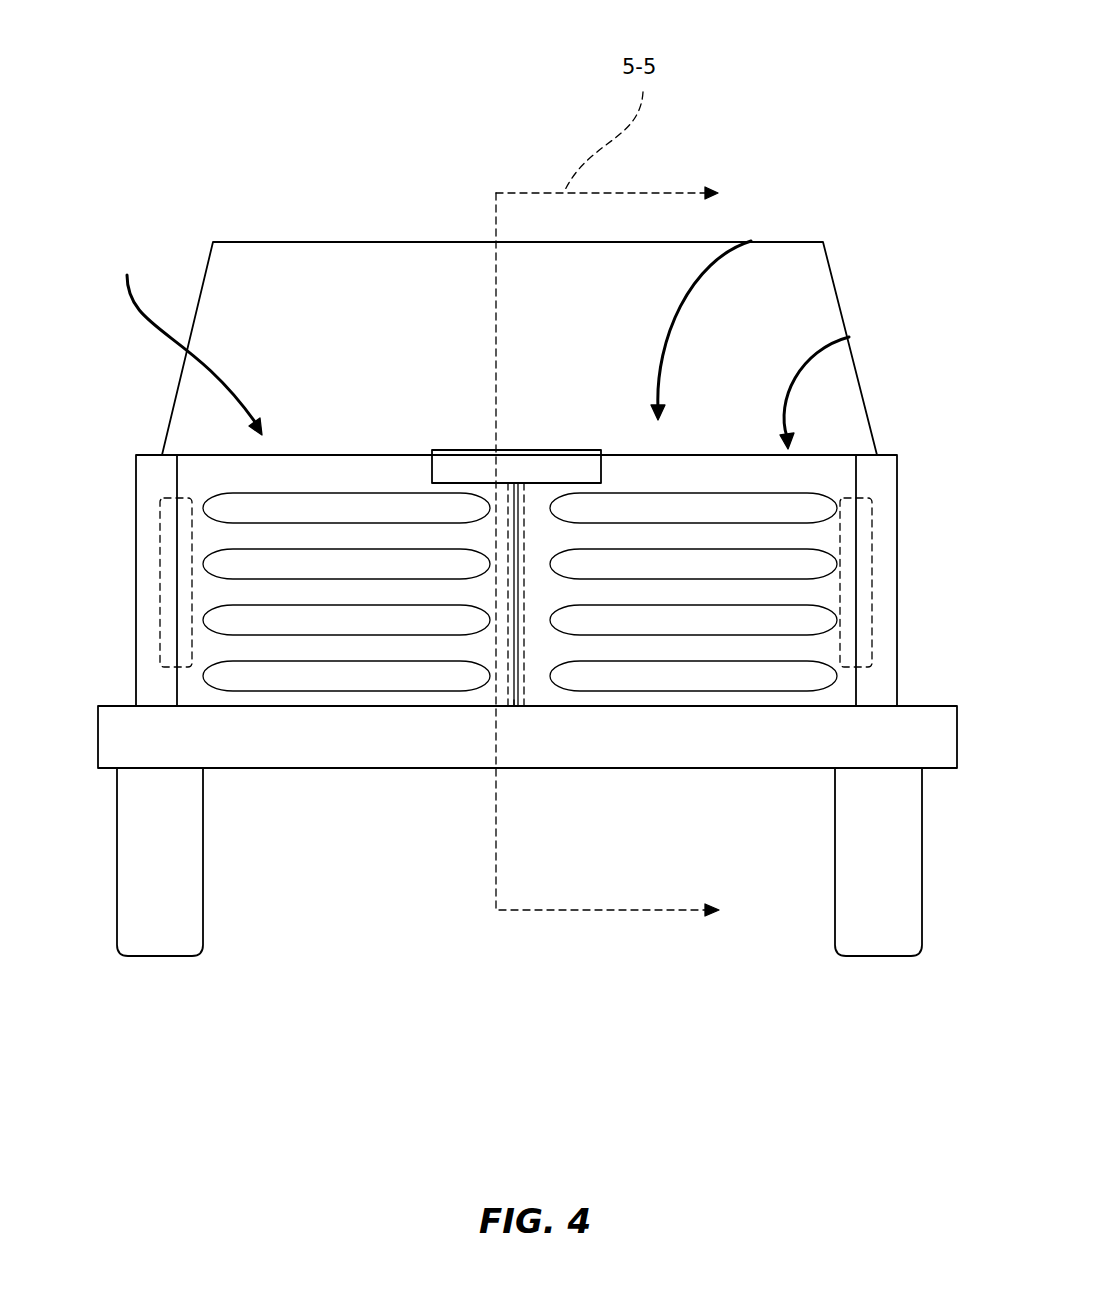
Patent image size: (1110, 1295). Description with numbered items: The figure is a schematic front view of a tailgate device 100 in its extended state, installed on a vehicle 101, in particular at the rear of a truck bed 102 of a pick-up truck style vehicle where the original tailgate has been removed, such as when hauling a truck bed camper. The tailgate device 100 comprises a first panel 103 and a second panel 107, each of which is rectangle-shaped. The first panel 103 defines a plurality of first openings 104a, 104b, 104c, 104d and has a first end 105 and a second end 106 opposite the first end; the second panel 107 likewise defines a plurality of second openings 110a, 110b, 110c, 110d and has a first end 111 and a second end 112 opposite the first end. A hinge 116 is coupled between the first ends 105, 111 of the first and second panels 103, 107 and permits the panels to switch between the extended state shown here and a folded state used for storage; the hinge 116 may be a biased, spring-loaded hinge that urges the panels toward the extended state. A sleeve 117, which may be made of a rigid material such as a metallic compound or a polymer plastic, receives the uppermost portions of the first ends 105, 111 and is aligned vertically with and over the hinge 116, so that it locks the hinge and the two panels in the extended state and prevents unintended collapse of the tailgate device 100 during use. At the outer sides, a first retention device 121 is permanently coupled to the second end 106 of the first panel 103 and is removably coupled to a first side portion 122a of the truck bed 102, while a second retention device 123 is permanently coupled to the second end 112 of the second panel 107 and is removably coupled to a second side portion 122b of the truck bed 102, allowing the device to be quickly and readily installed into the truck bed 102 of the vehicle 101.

The tailgate device 100 is at (744, 244).
The vehicle 101 is at (232, 250).
The truck bed 102 is at (393, 708).
The first panel 103 is at (186, 340).
The first opening 104a is at (346, 508).
The first opening 104b is at (346, 564).
The first opening 104c is at (346, 620).
The first opening 104d is at (346, 676).
The first end of first panel 105 is at (487, 490).
The second end of first panel 106 is at (185, 470).
The second panel 107 is at (849, 337).
The second opening 110a is at (693, 508).
The second opening 110b is at (693, 564).
The second opening 110c is at (693, 620).
The second opening 110d is at (693, 676).
The first end of second panel 111 is at (534, 510).
The second end of second panel 112 is at (856, 461).
The hinge 116 is at (523, 708).
The sleeve 117 is at (525, 457).
The first retention device 121 is at (160, 560).
The first side portion of truck bed 122a is at (155, 690).
The second side portion of truck bed 122b is at (888, 630).
The second retention device 123 is at (875, 533).